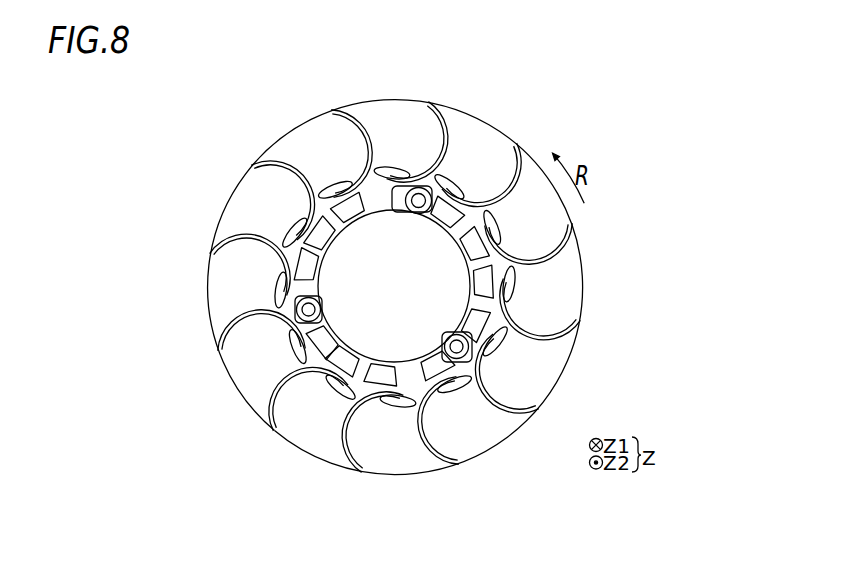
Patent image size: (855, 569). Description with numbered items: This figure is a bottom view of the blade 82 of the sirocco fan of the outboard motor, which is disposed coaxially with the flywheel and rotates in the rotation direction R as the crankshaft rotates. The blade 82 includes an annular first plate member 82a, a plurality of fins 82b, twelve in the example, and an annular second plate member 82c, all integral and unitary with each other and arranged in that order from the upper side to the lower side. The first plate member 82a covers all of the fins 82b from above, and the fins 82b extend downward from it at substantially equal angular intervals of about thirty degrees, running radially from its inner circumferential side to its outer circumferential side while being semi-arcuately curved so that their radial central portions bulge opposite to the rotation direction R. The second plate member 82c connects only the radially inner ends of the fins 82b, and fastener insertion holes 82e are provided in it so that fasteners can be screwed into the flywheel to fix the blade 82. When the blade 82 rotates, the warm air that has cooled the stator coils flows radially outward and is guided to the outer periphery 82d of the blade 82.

The blade 82 is at (597, 126).
The first plate member 82a is at (477, 135).
The fins 82b is at (250, 162).
The second plate member 82c is at (463, 264).
The outer periphery 82d is at (292, 448).
The fastener insertion holes 82e is at (417, 212).